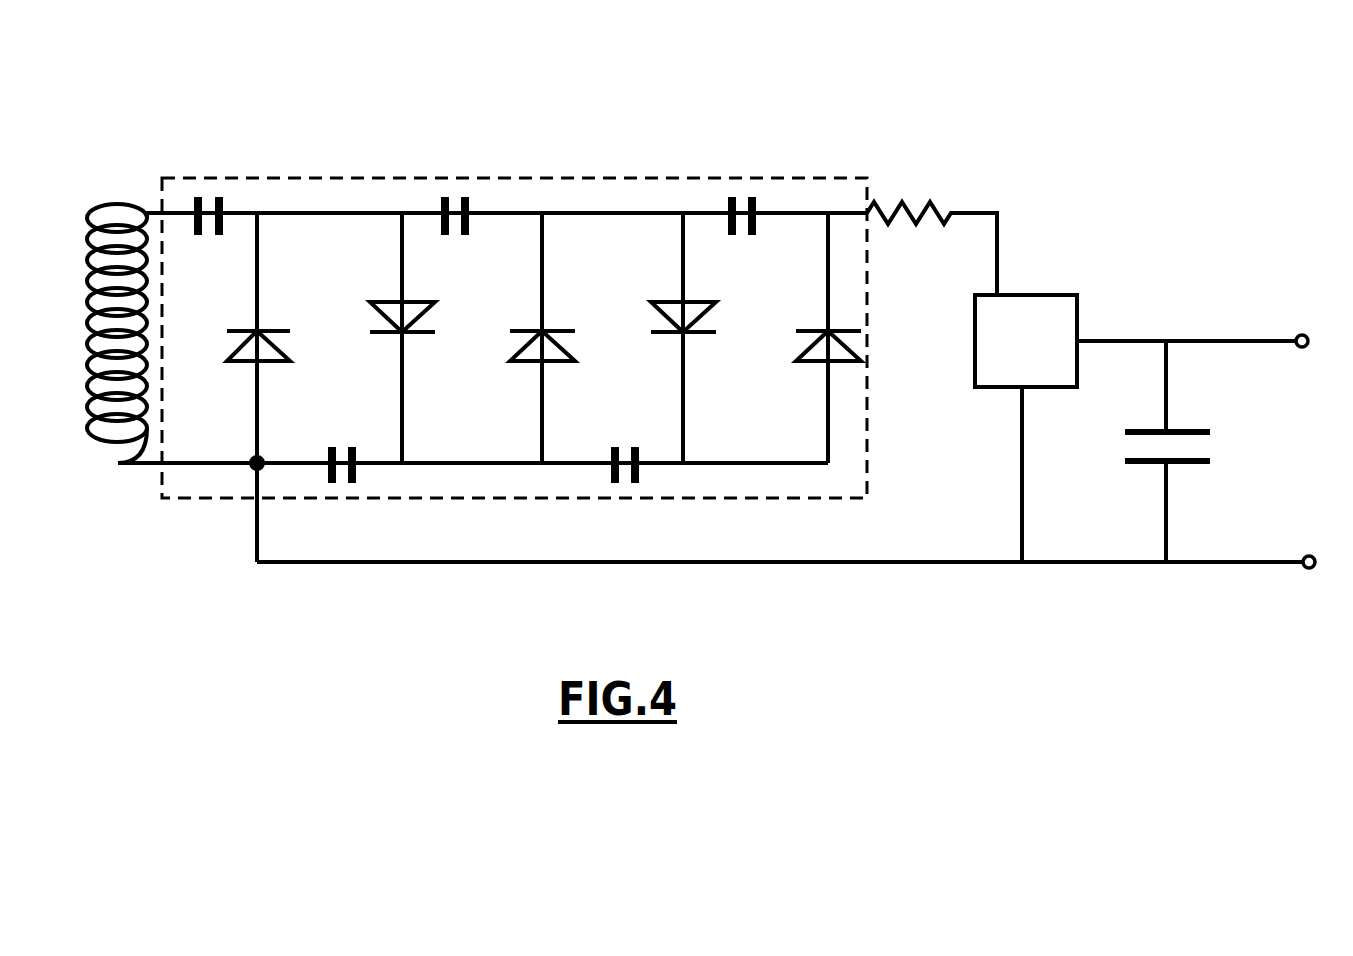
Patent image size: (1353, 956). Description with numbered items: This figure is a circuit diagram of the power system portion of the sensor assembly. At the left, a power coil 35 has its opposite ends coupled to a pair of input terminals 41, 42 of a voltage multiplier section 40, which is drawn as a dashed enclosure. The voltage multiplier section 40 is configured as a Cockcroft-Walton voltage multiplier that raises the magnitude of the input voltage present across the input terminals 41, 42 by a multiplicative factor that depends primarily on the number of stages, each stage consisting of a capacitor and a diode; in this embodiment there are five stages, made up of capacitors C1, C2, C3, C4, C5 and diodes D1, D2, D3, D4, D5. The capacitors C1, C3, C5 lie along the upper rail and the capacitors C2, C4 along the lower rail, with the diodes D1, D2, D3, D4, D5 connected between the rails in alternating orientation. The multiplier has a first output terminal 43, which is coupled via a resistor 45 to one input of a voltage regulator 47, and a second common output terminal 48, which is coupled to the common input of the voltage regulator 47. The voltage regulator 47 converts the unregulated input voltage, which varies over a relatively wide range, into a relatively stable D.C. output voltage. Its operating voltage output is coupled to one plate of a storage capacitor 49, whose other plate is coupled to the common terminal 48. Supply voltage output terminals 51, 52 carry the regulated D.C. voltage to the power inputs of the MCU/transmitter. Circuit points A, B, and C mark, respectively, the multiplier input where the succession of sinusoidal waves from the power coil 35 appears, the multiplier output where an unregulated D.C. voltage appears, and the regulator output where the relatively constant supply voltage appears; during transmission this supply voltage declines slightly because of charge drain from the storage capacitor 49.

The power coil 35 is at (77, 312).
The voltage multiplier section 40 is at (418, 175).
The input terminal 41 is at (172, 210).
The input terminal 42 is at (143, 468).
The first output terminal 43 is at (868, 208).
The resistor 45 is at (912, 210).
The voltage regulator 47 is at (1014, 340).
The common output terminal 48 is at (253, 513).
The storage capacitor 49 is at (1137, 477).
The supply voltage output terminal 51 is at (1275, 341).
The supply voltage output terminal 52 is at (1270, 570).
The circuit point A is at (144, 204).
The circuit point B is at (839, 205).
The circuit point C is at (1172, 336).
The capacitor C1 is at (208, 203).
The capacitor C2 is at (341, 490).
The capacitor C3 is at (456, 207).
The capacitor C4 is at (625, 490).
The capacitor C5 is at (740, 198).
The diode D1 is at (253, 348).
The diode D2 is at (405, 308).
The diode D3 is at (538, 334).
The diode D4 is at (687, 308).
The diode D5 is at (830, 345).